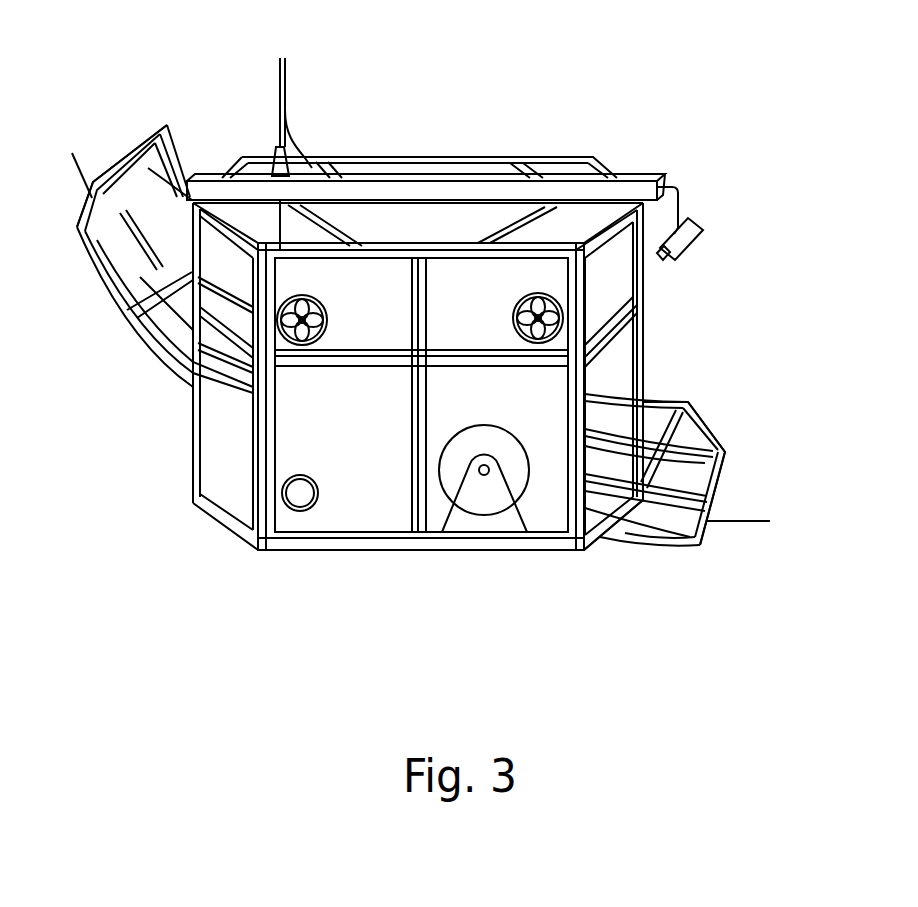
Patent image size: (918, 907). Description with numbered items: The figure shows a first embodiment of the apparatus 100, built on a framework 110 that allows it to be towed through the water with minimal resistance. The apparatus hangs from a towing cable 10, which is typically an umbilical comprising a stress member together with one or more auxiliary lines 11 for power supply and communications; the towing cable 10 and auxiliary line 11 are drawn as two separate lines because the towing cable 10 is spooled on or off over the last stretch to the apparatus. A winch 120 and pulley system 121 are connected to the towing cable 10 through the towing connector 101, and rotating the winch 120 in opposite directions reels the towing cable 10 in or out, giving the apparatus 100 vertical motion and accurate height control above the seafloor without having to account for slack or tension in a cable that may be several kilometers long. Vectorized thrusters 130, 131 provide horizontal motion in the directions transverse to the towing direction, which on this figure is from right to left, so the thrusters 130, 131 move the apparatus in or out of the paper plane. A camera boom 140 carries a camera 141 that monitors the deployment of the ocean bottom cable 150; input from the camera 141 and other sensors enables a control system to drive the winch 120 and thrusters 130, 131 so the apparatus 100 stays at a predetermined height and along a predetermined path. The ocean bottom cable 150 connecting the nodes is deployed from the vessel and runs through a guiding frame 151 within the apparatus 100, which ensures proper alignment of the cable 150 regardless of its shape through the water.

The apparatus 100 is at (565, 108).
The towing cable 10 is at (279, 80).
The auxiliary line 11 is at (287, 113).
The towing connector 101 is at (277, 173).
The framework 110 is at (600, 448).
The winch 120 is at (482, 442).
The pulley system 121 is at (302, 494).
The vectorized thruster 130 is at (517, 310).
The vectorized thruster 131 is at (318, 316).
The camera boom 140 is at (450, 182).
The camera 141 is at (688, 238).
The ocean bottom cable 150 is at (80, 172).
The guiding frame 151 is at (180, 157).